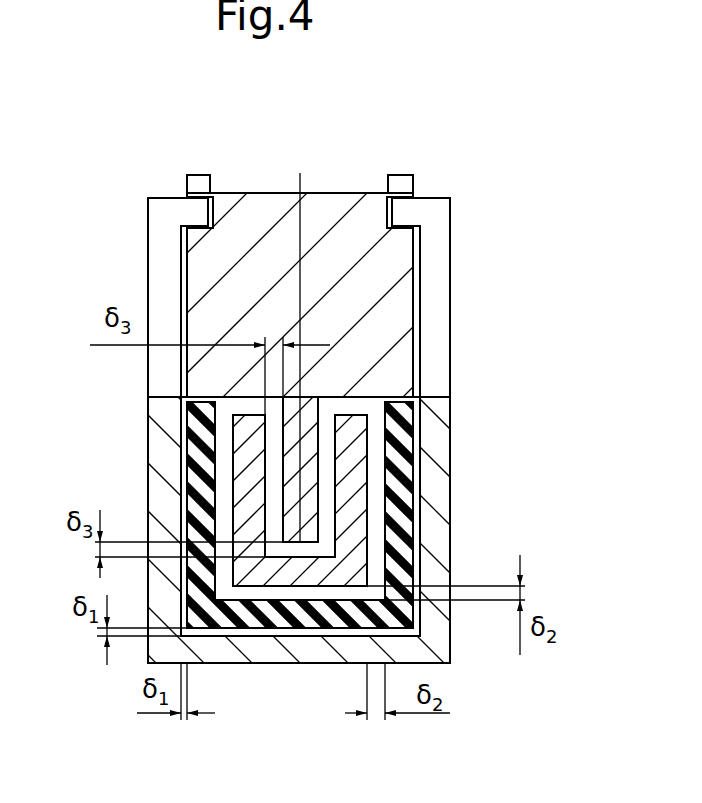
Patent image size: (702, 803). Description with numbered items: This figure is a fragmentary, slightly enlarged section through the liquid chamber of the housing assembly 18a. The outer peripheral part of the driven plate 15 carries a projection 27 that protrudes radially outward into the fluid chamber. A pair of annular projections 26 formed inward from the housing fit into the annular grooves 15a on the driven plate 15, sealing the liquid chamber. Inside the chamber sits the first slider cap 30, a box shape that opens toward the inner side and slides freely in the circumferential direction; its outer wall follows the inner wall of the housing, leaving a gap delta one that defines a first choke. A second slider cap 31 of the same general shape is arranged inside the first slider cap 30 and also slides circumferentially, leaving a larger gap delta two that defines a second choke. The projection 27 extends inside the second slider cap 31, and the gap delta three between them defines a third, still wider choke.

The driven plate 15 is at (407, 295).
The annular groove 15a is at (413, 224).
The housing assembly 18a is at (273, 665).
The annular projection 26 is at (413, 193).
The projection 27 is at (310, 467).
The first slider cap 30 is at (403, 502).
The second slider cap 31 is at (243, 428).